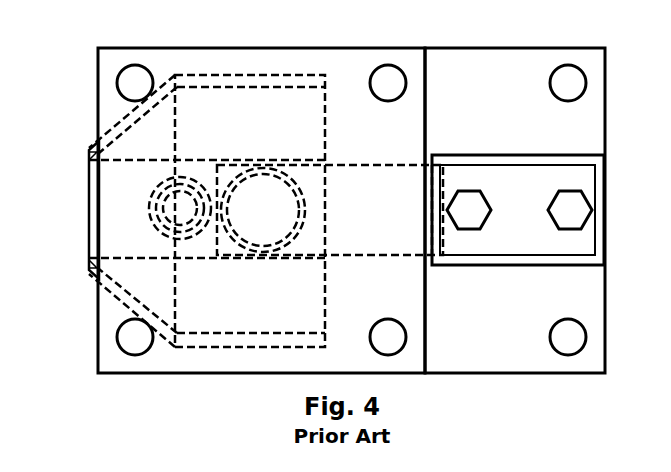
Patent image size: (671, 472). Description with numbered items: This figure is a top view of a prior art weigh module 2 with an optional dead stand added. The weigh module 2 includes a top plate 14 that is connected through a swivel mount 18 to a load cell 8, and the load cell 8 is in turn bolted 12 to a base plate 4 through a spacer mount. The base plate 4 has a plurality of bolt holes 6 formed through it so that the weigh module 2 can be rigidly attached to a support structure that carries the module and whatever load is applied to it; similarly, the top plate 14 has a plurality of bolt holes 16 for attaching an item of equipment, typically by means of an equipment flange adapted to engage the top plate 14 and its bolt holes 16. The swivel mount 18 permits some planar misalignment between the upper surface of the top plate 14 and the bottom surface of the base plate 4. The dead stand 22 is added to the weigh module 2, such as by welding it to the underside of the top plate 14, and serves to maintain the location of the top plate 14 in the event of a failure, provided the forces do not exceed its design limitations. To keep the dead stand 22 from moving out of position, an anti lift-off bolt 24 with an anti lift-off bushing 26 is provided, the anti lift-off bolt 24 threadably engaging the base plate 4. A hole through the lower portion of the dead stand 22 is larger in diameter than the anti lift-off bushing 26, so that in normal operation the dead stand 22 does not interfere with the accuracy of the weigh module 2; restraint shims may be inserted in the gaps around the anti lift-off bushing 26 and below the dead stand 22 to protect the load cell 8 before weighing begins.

The weigh module 2 is at (660, 30).
The base plate 4 is at (532, 47).
The bolt holes 6 is at (562, 96).
The load cell 8 is at (342, 163).
The bolts 12 is at (552, 202).
The top plate 14 is at (271, 47).
The bolt holes 16 is at (118, 80).
The swivel mount 18 is at (300, 233).
The dead stand 22 is at (186, 90).
The anti lift-off bolt 24 is at (168, 196).
The anti lift-off bushing 26 is at (163, 236).